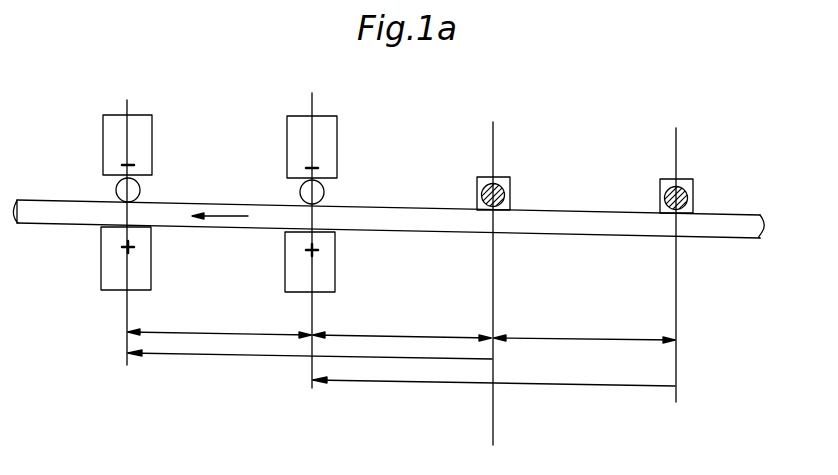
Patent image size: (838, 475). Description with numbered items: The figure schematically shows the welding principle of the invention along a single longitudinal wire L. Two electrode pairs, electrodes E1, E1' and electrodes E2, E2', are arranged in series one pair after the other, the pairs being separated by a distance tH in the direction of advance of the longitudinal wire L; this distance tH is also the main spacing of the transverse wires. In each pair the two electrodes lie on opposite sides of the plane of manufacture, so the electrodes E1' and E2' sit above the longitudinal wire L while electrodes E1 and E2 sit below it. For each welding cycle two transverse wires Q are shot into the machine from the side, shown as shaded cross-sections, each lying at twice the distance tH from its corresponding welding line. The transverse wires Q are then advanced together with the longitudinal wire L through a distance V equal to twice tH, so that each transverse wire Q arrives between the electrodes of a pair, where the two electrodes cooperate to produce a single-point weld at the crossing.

The longitudinal wire L is at (553, 225).
The transverse wire Q is at (141, 189).
The electrode E1 is at (332, 262).
The electrode E2 is at (146, 258).
The electrode E1' is at (333, 147).
The electrode E2' is at (147, 145).
The distance tH is at (401, 327).
The advancing distance V is at (345, 358).